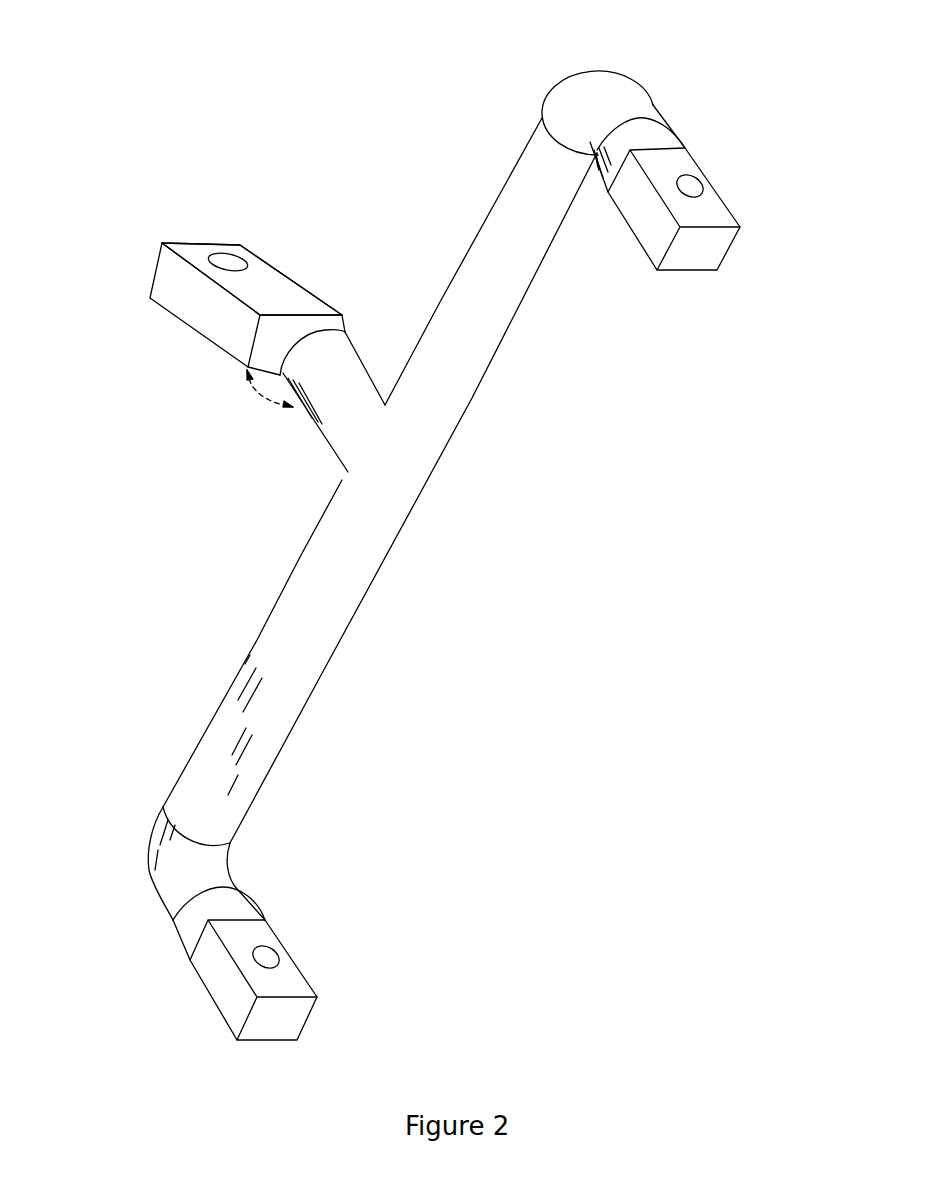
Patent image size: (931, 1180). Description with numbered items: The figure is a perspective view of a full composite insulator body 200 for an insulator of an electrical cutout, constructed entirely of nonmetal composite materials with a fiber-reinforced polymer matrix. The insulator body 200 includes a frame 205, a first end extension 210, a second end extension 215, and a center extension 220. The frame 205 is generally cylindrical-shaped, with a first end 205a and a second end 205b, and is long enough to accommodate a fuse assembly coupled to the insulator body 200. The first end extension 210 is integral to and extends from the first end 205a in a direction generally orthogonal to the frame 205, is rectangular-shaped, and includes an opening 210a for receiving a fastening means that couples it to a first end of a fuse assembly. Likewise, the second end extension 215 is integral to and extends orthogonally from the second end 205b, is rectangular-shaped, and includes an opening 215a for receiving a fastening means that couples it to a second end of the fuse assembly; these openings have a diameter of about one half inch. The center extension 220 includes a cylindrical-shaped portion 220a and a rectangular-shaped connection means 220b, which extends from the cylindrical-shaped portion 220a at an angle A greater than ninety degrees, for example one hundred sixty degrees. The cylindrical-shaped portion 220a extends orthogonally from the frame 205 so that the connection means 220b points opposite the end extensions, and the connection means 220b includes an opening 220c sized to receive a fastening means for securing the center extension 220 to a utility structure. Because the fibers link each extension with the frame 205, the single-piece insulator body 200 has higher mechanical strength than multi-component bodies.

The insulator body 200 is at (185, 95).
The frame 205 is at (430, 486).
The first end 205a is at (600, 88).
The second end 205b is at (160, 868).
The first end extension 210 is at (712, 150).
The opening 210a is at (700, 185).
The second end extension 215 is at (200, 1015).
The opening 215a is at (272, 958).
The center extension 220 is at (198, 350).
The cylindrical-shaped portion 220a is at (360, 372).
The connection means 220b is at (285, 282).
The opening 220c is at (230, 258).
The angle A is at (262, 395).